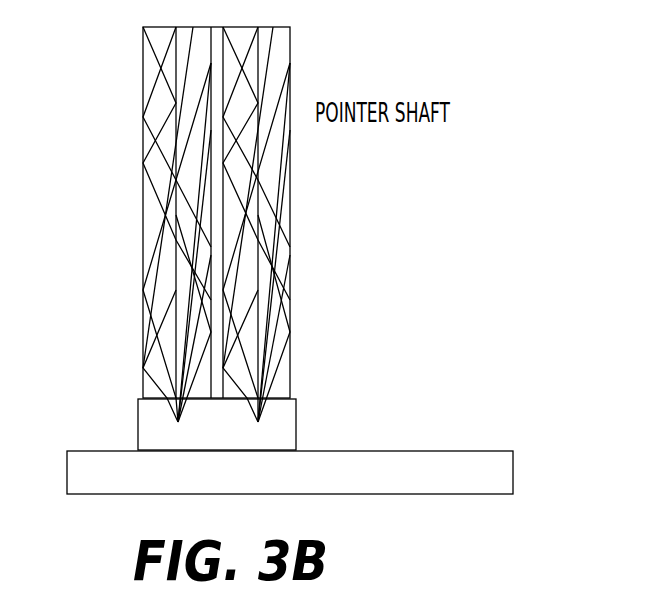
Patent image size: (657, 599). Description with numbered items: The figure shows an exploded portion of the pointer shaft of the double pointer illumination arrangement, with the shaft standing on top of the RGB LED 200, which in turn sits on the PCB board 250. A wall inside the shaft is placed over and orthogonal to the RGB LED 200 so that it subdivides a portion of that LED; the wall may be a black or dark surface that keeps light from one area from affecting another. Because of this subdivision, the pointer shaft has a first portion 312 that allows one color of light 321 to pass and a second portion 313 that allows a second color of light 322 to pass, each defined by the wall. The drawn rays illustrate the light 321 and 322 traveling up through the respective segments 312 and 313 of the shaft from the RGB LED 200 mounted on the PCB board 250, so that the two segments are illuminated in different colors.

The second color of light 322 is at (151, 160).
The second portion 313 is at (165, 219).
The one color of light 321 is at (263, 197).
The first portion 312 is at (258, 271).
The RGB LED 200 is at (296, 432).
The PCB board 250 is at (513, 475).